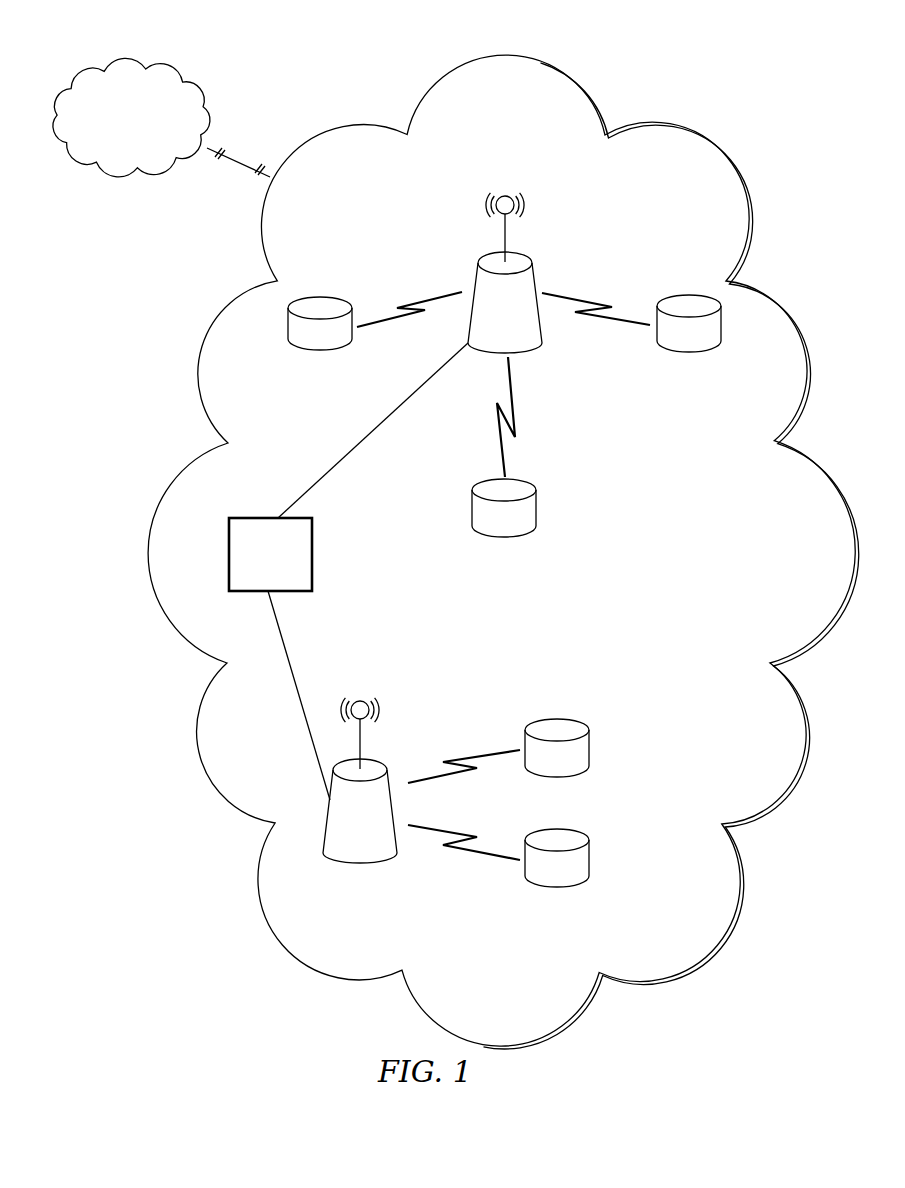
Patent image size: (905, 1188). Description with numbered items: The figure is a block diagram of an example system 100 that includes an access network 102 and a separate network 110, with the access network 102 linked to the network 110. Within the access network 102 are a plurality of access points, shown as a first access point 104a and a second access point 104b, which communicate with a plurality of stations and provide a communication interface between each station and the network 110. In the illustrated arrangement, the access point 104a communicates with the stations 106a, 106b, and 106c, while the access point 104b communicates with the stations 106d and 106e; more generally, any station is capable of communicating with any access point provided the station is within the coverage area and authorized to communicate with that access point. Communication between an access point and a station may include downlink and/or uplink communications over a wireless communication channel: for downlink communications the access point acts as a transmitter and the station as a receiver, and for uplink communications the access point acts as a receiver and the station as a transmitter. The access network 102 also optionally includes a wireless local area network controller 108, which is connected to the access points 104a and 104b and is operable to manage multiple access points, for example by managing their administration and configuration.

The system 100 is at (712, 62).
The access network 102 is at (487, 155).
The access point 104a is at (542, 350).
The access point 104b is at (360, 862).
The station 106a is at (322, 351).
The station 106b is at (537, 508).
The station 106c is at (692, 351).
The station 106d is at (590, 750).
The station 106e is at (590, 860).
The wireless local area network controller 108 is at (313, 553).
The network 110 is at (116, 139).